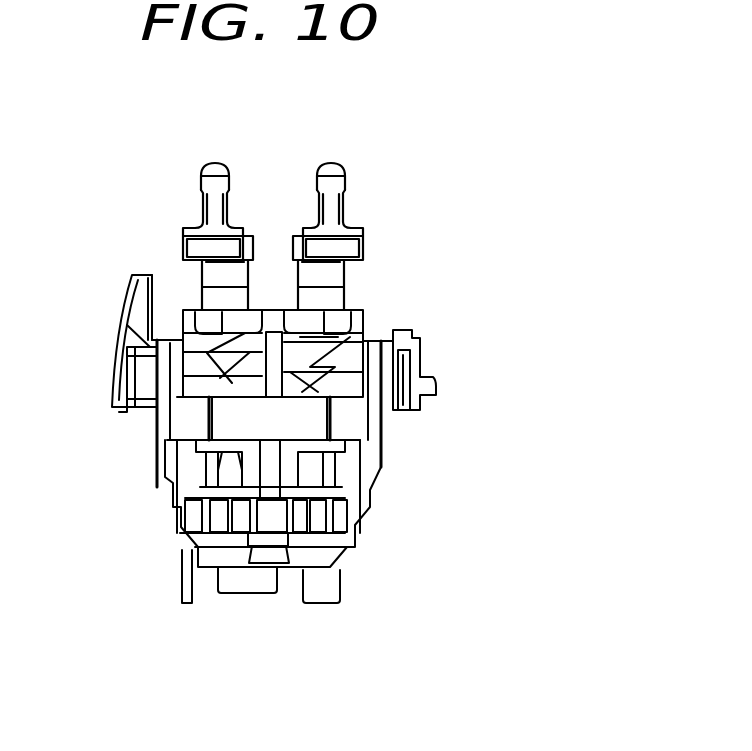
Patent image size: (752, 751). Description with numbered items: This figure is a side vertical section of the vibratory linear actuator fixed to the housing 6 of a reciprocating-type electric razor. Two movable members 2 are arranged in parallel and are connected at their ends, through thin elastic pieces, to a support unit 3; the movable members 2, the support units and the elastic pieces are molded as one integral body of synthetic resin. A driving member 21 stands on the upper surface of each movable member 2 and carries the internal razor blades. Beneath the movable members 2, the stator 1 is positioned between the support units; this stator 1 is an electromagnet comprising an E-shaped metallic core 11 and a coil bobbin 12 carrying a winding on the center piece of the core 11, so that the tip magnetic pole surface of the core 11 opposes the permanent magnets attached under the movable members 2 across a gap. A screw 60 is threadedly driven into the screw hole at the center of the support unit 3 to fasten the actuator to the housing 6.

The stator 1 is at (250, 423).
The movable member 2 is at (180, 308).
The driving member 21 is at (200, 180).
The coil bobbin 12 is at (393, 340).
The core 11 is at (308, 418).
The support unit 3 is at (317, 447).
The housing 6 is at (368, 502).
The screw 60 is at (275, 525).